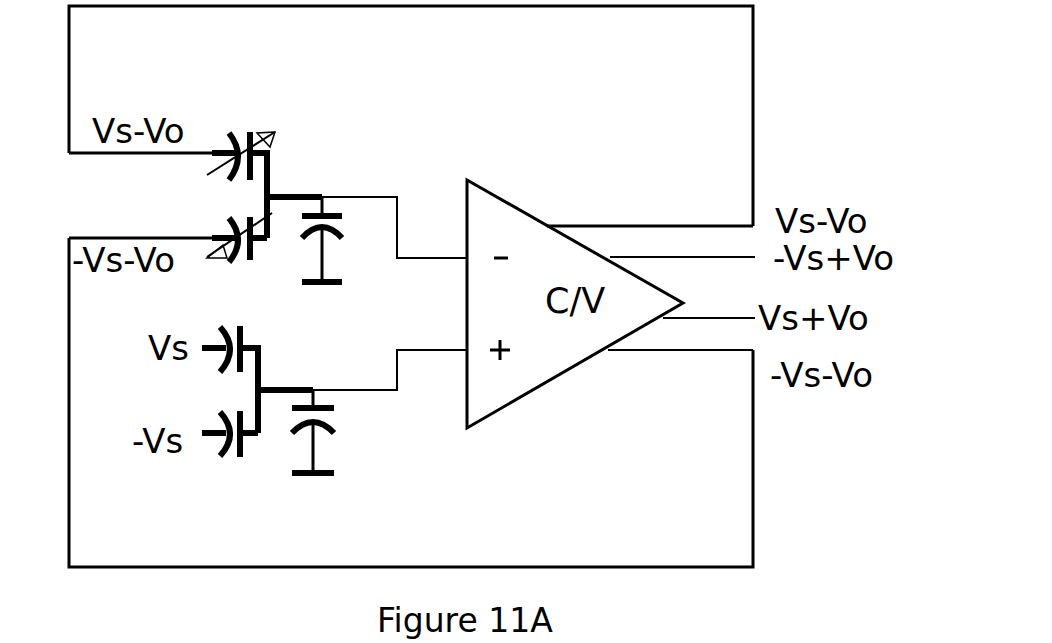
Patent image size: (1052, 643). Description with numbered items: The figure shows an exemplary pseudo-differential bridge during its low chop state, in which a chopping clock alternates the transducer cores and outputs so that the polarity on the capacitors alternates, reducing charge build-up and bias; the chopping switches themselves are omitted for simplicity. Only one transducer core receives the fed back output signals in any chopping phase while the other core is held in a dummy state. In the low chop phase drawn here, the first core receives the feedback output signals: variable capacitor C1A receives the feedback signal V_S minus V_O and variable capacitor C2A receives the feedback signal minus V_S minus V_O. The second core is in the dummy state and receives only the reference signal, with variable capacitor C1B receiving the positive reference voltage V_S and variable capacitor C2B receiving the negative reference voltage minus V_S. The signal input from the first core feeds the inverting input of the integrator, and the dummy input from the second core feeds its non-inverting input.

The variable capacitor C1A is at (241, 166).
The variable capacitor C2A is at (239, 223).
The variable capacitor C1B is at (230, 361).
The variable capacitor C2B is at (230, 418).